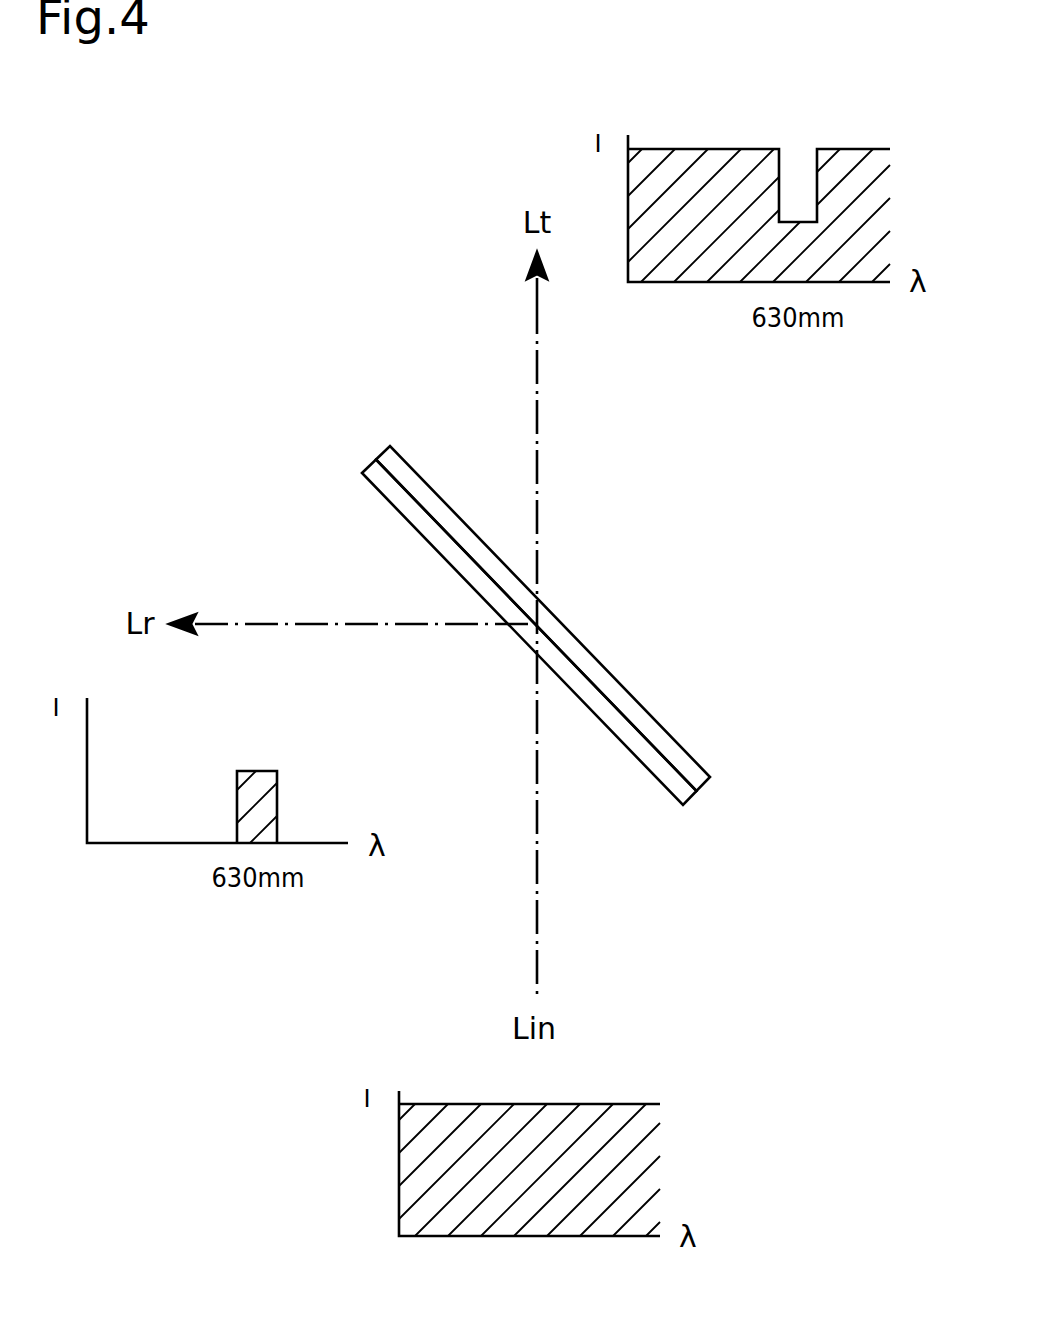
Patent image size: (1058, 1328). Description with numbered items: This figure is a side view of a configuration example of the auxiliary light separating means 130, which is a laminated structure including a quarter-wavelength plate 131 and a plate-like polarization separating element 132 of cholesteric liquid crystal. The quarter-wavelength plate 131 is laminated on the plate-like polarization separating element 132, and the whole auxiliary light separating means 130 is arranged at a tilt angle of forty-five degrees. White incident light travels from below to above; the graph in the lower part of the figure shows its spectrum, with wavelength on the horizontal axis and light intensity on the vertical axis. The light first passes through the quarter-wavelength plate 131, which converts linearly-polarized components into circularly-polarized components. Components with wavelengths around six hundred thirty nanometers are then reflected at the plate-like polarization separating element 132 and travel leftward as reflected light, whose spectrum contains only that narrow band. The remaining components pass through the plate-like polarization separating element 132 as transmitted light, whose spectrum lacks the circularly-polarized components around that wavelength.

The auxiliary light separating means 130 is at (556, 627).
The ¼-wavelength plate 131 is at (688, 801).
The plate-like polarization separating element 132 is at (704, 780).